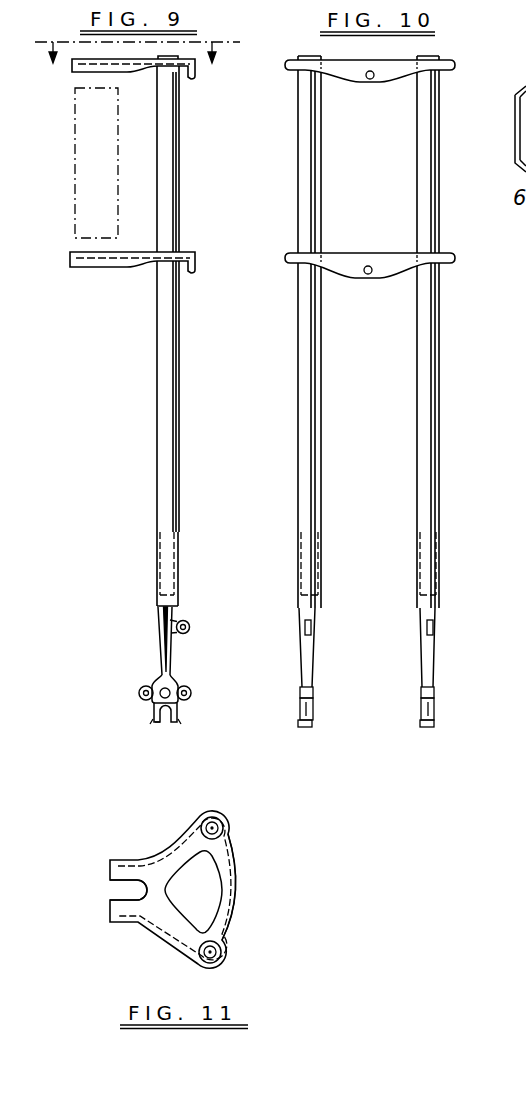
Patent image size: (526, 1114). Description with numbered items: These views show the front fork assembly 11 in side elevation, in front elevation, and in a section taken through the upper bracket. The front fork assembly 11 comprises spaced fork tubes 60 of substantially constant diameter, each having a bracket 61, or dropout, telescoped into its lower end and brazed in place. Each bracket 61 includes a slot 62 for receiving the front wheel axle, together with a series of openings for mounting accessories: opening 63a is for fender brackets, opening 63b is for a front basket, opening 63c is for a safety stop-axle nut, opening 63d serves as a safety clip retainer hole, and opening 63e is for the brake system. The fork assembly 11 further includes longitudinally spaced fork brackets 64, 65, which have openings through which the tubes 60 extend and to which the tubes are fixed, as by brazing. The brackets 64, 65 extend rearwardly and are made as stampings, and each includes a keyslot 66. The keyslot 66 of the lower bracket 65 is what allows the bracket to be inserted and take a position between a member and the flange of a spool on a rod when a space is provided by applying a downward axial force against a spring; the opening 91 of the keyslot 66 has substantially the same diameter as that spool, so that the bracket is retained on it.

In FIG. 9, the front fork assembly 11 is at (195, 576).
In FIG. 11, the front fork assembly 11 is at (236, 962).
In FIG. 10, the fork tube 60 is at (312, 438).
In FIG. 11, the fork tube 60 is at (223, 838).
In FIG. 9, the bracket 61 is at (160, 643).
In FIG. 10, the bracket 61 is at (305, 658).
In FIG. 9, the slot 62 is at (165, 723).
In FIG. 9, the opening 63a is at (140, 698).
In FIG. 9, the opening 63b is at (192, 698).
In FIG. 9, the opening 63c is at (154, 722).
In FIG. 9, the opening 63d is at (169, 689).
In FIG. 9, the opening 63e is at (190, 626).
In FIG. 9, the fork bracket 64 is at (196, 76).
In FIG. 10, the fork bracket 64 is at (363, 79).
In FIG. 11, the fork bracket 64 is at (239, 926).
In FIG. 9, the fork bracket 65 is at (196, 255).
In FIG. 10, the fork bracket 65 is at (362, 257).
In FIG. 11, the keyslot 66 is at (127, 889).
In FIG. 11, the opening 91 is at (137, 898).